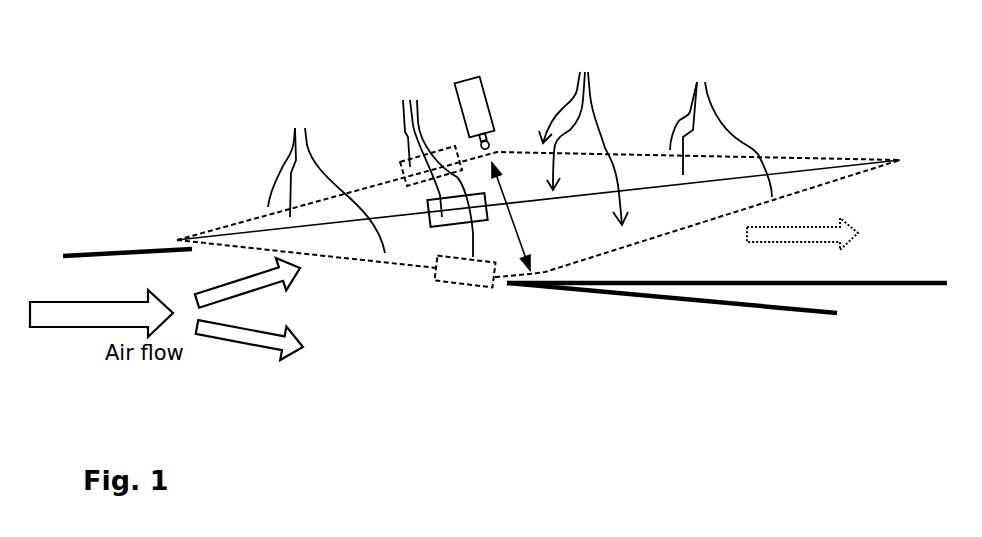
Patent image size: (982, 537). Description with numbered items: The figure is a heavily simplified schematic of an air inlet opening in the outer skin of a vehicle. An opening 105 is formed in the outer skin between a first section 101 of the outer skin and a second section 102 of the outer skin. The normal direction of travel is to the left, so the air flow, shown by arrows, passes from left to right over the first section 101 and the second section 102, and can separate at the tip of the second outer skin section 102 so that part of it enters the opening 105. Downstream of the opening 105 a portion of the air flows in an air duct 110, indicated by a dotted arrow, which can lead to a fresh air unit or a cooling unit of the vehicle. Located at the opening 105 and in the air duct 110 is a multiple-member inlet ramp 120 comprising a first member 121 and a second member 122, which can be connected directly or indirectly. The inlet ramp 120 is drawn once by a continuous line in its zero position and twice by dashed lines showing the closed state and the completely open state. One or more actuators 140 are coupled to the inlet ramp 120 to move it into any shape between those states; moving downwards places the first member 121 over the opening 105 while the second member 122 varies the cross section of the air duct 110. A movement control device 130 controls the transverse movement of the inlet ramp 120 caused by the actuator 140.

The first section of the outer skin 101 is at (127, 265).
The second section of the outer skin 102 is at (672, 308).
The opening 105 is at (538, 227).
The air duct 110 is at (833, 231).
The multiple-member inlet ramp 120 is at (583, 137).
The first member of the inlet ramp 121 is at (326, 178).
The second member of the inlet ramp 122 is at (721, 125).
The movement control device 130 is at (478, 100).
The actuator 140 is at (441, 181).